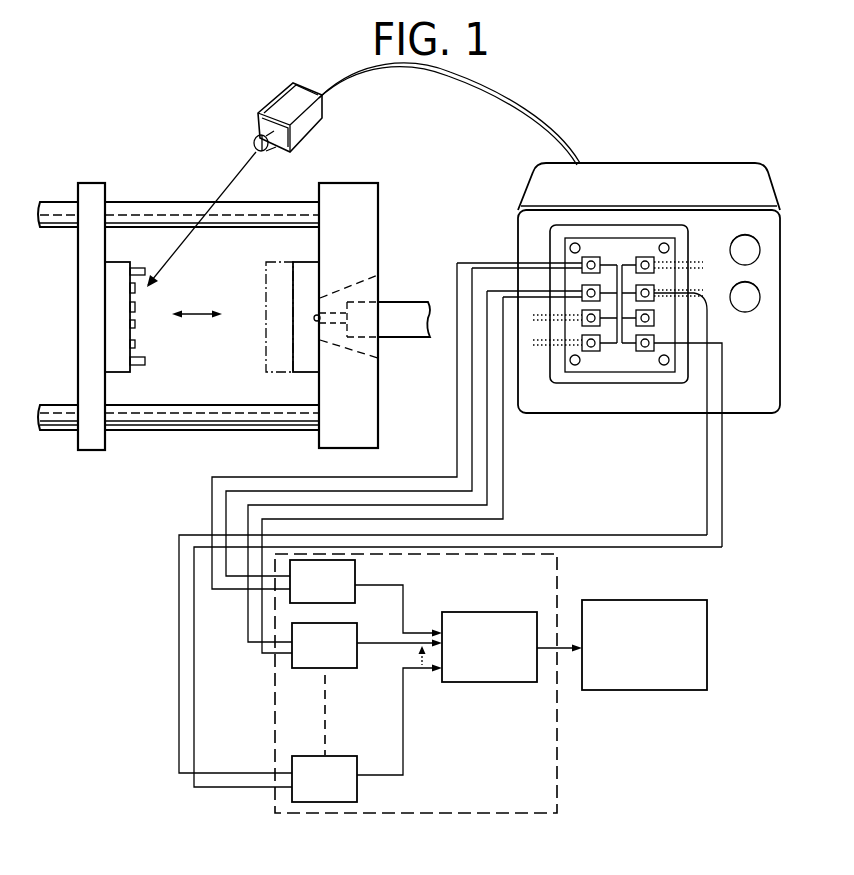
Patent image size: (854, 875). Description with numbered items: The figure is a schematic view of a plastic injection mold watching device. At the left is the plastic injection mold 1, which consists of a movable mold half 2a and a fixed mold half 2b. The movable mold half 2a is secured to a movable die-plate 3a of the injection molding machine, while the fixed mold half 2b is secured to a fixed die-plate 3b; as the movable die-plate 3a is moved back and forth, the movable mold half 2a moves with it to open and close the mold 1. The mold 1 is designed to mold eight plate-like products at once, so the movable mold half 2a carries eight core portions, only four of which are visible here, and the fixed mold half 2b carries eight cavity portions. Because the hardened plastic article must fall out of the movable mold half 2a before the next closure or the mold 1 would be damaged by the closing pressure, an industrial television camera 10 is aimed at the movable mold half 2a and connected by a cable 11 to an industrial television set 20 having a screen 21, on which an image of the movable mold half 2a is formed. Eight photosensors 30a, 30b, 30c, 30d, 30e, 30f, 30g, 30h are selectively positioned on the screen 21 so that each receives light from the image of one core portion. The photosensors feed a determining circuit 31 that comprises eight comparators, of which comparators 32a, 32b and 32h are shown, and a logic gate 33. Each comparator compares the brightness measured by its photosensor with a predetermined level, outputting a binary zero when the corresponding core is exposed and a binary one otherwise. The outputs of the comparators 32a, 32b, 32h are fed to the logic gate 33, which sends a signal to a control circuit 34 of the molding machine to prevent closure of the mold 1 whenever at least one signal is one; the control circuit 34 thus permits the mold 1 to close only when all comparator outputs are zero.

The plastic injection mold 1 is at (278, 382).
The movable mold half 2a is at (118, 270).
The fixed mold half 2b is at (308, 268).
The movable die-plate 3a is at (93, 185).
The fixed die-plate 3b is at (358, 197).
The industrial television camera 10 is at (283, 105).
The cable 11 is at (511, 107).
The industrial television set 20 is at (697, 170).
The screen 21 is at (655, 232).
The photosensor 30a is at (588, 257).
The photosensor 30b is at (597, 285).
The photosensor 30c is at (585, 328).
The photosensor 30d is at (598, 351).
The photosensor 30e is at (655, 260).
The photosensor 30f is at (684, 410).
The photosensor 30g is at (633, 327).
The photosensor 30h is at (650, 351).
The determining circuit 31 is at (558, 754).
The comparator 32a is at (355, 567).
The comparator 32b is at (342, 670).
The comparator 32h is at (358, 787).
The logic gate 33 is at (483, 682).
The control circuit 34 is at (663, 690).